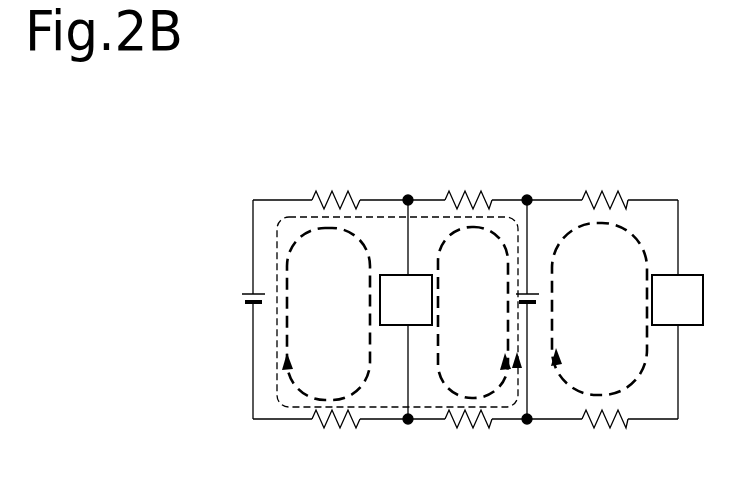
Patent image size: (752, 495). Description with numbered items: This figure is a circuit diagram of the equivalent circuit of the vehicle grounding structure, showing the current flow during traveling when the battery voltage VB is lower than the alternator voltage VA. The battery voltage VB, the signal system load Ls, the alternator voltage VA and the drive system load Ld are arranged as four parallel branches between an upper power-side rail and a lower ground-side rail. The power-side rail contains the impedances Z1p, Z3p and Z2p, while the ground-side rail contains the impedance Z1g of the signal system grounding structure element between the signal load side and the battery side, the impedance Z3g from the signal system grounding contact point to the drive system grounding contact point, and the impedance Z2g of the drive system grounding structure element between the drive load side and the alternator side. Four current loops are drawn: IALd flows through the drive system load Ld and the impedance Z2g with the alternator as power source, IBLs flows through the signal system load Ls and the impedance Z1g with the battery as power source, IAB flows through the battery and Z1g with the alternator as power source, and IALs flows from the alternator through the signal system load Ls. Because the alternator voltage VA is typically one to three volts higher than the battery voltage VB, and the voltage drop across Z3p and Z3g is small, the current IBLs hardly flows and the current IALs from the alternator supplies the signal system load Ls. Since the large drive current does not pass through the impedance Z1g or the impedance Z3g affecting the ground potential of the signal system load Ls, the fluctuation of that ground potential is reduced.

The impedance Z1p is at (336, 180).
The impedance Z3p is at (468, 180).
The impedance Z2p is at (605, 180).
The impedance of the signal system grounding structure element Z1g is at (336, 437).
The impedance between signal and drive grounding contact points Z3g is at (468, 437).
The impedance of the drive system grounding structure element Z2g is at (605, 437).
The signal system load Ls is at (406, 300).
The drive system load Ld is at (677, 300).
The battery voltage VB is at (240, 299).
The alternator voltage VA is at (514, 299).
The current flowing through the battery and Z1g IAB is at (399, 313).
The current through signal system load from battery IBLs is at (326, 314).
The current through signal system load from alternator IALs is at (474, 312).
The current through drive system load from alternator IALd is at (599, 309).